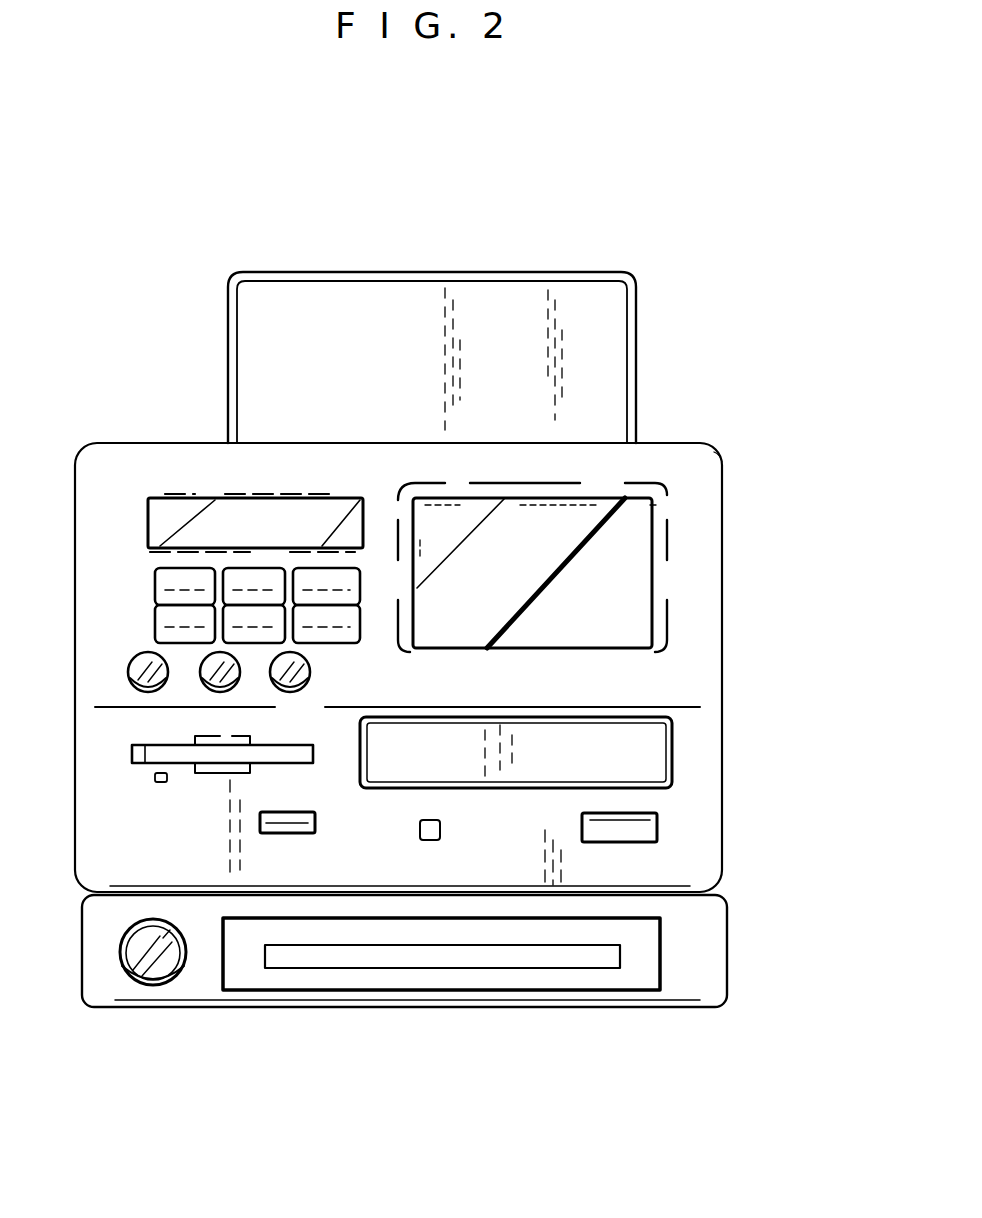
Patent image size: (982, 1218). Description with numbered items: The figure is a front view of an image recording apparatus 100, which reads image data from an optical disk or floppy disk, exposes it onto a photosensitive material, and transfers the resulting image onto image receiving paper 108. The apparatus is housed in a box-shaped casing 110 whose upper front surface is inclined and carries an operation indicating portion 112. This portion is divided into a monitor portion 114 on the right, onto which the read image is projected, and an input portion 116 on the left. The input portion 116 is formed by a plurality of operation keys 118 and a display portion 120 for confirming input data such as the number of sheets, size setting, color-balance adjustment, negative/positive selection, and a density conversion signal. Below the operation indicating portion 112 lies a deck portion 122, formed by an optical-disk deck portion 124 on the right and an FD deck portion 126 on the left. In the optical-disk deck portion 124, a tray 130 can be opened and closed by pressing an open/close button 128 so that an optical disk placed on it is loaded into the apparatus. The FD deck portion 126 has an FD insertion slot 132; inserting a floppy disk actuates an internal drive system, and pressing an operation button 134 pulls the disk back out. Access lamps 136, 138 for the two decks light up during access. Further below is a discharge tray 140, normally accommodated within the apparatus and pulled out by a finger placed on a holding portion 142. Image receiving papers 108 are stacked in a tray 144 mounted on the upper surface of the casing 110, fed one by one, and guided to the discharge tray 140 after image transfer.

The image recording apparatus 100 is at (750, 508).
The image receiving paper 108 is at (597, 300).
The casing 110 is at (708, 655).
The operation indicating portion 112 is at (222, 385).
The monitor portion 114 is at (440, 522).
The input portion 116 is at (133, 500).
The operation keys 118 is at (142, 666).
The display portion 120 is at (148, 526).
The deck portion 122 is at (818, 735).
The optical-disk deck portion 124 is at (673, 760).
The FD deck portion 126 is at (313, 765).
The open/close button 128 is at (657, 840).
The tray 130 is at (660, 735).
The FD insertion slot 132 is at (143, 766).
The operation button 134 is at (316, 834).
The access lamp 136 is at (434, 836).
The access lamp 138 is at (160, 790).
The discharge tray 140 is at (660, 948).
The holding portion 142 is at (538, 945).
The tray 144 is at (637, 338).